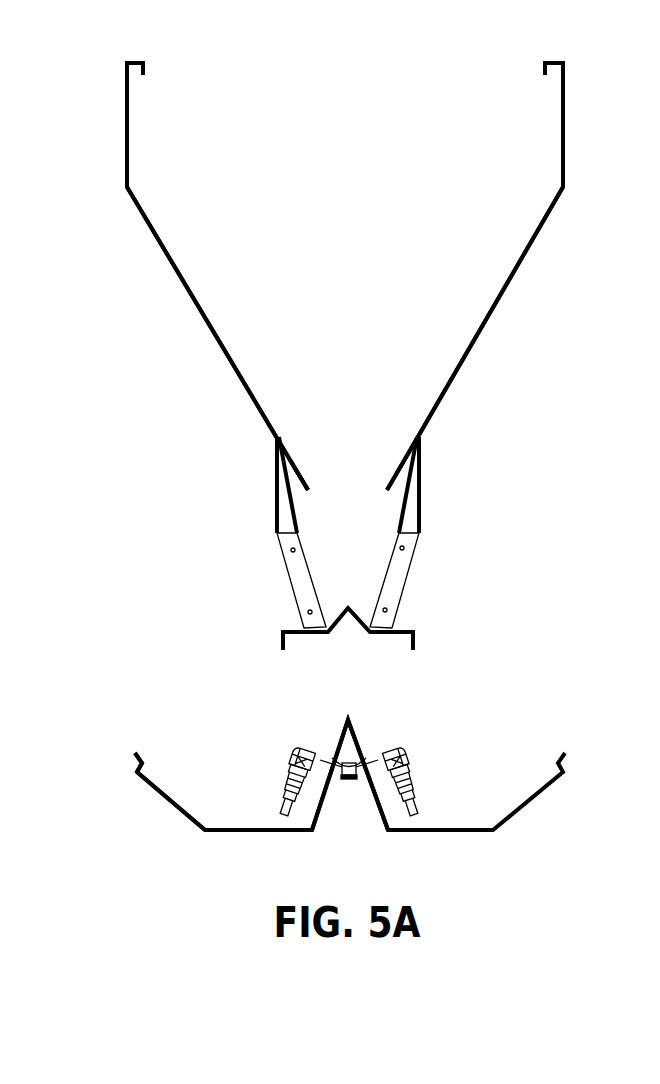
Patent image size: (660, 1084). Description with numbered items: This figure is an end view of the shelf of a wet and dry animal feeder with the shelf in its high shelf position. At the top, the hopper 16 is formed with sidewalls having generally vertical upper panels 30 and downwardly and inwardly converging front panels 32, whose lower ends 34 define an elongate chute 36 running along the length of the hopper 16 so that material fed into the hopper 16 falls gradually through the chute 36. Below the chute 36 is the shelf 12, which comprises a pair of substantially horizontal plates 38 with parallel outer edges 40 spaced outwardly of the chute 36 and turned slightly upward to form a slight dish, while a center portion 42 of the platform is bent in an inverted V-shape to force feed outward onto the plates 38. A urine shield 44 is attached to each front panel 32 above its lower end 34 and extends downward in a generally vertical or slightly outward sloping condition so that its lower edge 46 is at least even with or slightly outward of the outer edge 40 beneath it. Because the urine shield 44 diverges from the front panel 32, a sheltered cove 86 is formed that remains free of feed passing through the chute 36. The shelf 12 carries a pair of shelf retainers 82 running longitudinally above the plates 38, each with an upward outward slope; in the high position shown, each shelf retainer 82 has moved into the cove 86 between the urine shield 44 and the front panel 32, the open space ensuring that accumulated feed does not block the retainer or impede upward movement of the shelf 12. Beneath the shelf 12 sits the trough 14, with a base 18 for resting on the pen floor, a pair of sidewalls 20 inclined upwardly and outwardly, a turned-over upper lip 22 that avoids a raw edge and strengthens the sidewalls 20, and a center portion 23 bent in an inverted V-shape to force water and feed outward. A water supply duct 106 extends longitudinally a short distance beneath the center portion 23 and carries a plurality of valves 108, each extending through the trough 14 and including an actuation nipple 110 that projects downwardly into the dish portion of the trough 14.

The shelf 12 is at (403, 586).
The trough 14 is at (258, 832).
The hopper 16 is at (127, 110).
The base 18 is at (238, 832).
The sidewalls 20 is at (177, 806).
The upper lip 22 is at (143, 754).
The center portion 23 is at (365, 728).
The upper panels 30 is at (565, 136).
The front panels 32 is at (240, 380).
The lower ends 34 is at (303, 482).
The chute 36 is at (354, 442).
The horizontal plates 38 is at (393, 637).
The outer edges 40 is at (416, 630).
The center portion 42 is at (333, 637).
The urine shield 44 is at (277, 503).
The lower edge 46 is at (290, 532).
The shelf retainers 82 is at (306, 518).
The sheltered cove 86 is at (299, 494).
The water supply duct 106 is at (347, 782).
The valves 108 is at (408, 760).
The actuation nipple 110 is at (408, 808).